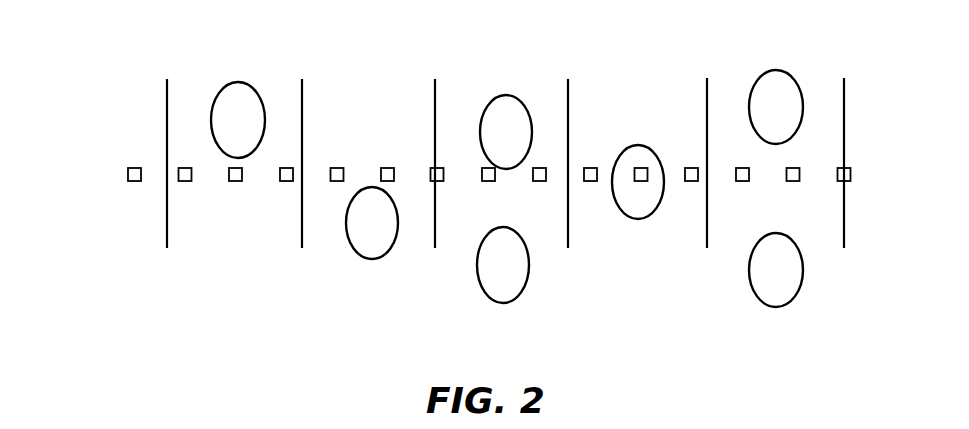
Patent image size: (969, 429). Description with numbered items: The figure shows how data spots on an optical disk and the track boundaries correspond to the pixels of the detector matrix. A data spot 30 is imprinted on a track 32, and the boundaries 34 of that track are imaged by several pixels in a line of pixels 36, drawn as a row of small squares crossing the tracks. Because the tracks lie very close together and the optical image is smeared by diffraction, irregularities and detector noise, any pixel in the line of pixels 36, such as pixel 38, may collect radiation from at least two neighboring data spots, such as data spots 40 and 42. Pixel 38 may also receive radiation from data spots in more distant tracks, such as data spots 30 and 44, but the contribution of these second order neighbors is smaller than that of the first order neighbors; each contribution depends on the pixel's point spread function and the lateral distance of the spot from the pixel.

The data spot 30 is at (239, 82).
The track 32 is at (253, 263).
The boundaries 34 is at (167, 247).
The line of pixels 36 is at (126, 168).
The pixel 38 is at (437, 167).
The data spot 40 is at (378, 259).
The data spot 42 is at (502, 95).
The data spot 44 is at (639, 219).